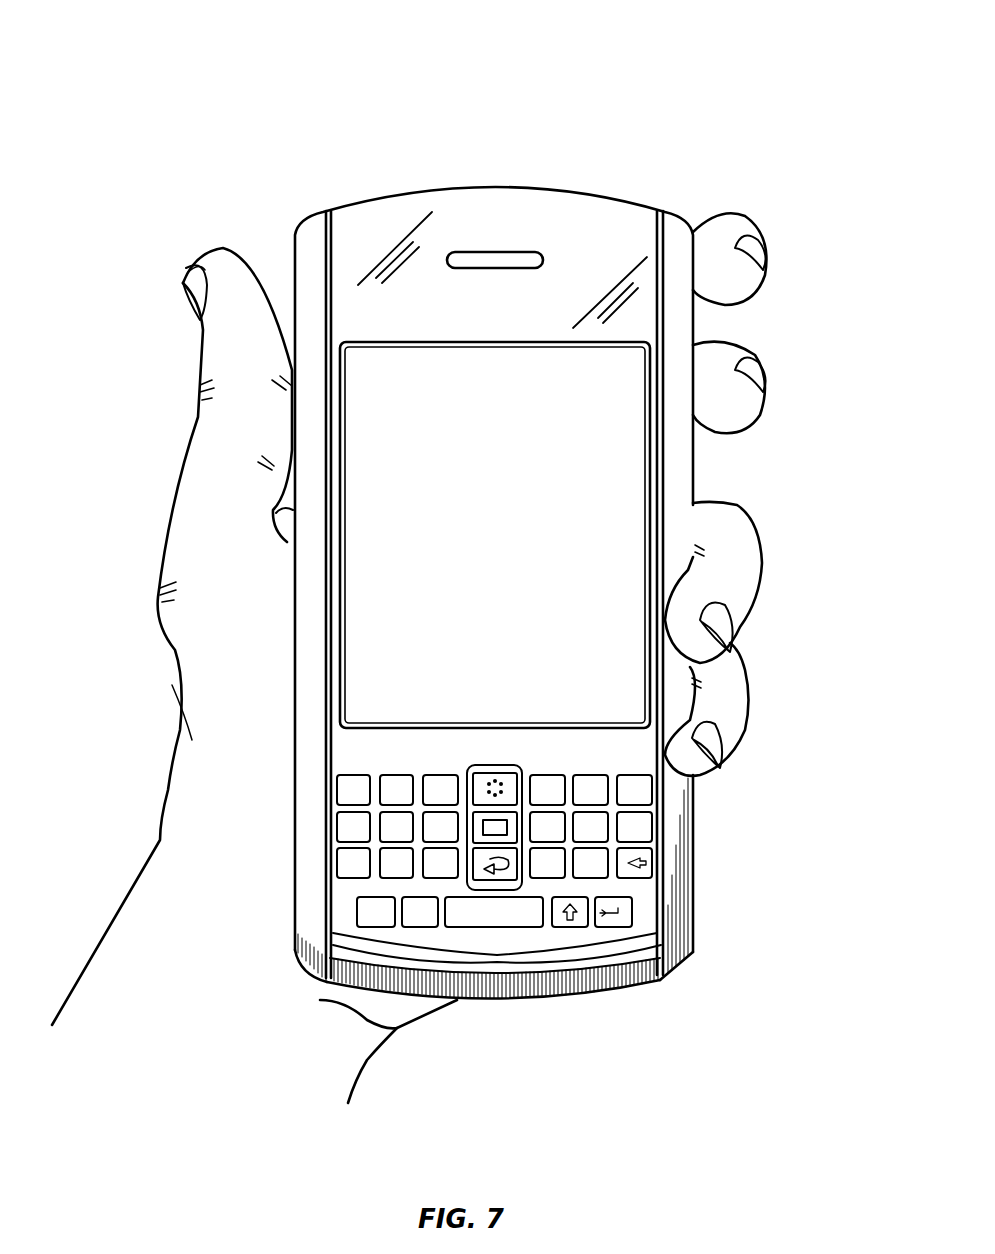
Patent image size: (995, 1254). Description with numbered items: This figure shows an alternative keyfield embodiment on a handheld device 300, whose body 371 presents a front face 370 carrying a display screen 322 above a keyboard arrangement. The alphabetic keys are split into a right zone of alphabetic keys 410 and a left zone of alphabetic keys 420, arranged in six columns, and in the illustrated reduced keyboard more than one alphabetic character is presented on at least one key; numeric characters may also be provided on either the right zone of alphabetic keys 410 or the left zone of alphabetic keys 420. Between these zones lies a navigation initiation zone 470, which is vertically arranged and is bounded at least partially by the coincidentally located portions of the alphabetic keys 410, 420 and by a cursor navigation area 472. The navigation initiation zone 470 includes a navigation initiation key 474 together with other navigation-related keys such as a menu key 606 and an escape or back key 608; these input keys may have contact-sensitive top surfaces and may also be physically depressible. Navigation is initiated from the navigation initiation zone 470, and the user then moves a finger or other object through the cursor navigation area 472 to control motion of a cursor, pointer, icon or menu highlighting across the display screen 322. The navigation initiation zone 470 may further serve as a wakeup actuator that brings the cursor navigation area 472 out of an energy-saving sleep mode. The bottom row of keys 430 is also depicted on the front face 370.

The handheld device 300 is at (748, 65).
The front face 370 is at (681, 258).
The body 371 is at (288, 243).
The display screen 322 is at (360, 386).
The left zone of alphabetic keys 420 is at (458, 767).
The navigation initiation zone 470 is at (290, 779).
The right zone of alphabetic keys 410 is at (652, 767).
The menu key 606 is at (478, 787).
The navigation initiation key 474 is at (478, 825).
The escape or back key 608 is at (478, 863).
The bottom key row 430 is at (640, 890).
The cursor navigation area 472 is at (497, 955).